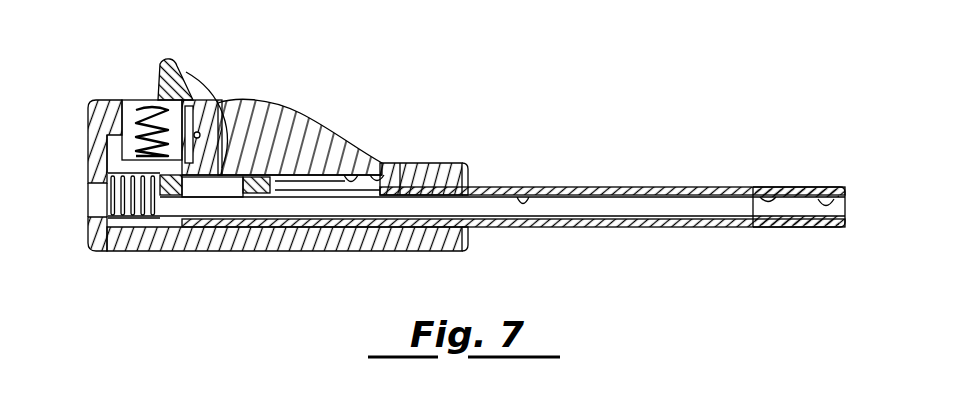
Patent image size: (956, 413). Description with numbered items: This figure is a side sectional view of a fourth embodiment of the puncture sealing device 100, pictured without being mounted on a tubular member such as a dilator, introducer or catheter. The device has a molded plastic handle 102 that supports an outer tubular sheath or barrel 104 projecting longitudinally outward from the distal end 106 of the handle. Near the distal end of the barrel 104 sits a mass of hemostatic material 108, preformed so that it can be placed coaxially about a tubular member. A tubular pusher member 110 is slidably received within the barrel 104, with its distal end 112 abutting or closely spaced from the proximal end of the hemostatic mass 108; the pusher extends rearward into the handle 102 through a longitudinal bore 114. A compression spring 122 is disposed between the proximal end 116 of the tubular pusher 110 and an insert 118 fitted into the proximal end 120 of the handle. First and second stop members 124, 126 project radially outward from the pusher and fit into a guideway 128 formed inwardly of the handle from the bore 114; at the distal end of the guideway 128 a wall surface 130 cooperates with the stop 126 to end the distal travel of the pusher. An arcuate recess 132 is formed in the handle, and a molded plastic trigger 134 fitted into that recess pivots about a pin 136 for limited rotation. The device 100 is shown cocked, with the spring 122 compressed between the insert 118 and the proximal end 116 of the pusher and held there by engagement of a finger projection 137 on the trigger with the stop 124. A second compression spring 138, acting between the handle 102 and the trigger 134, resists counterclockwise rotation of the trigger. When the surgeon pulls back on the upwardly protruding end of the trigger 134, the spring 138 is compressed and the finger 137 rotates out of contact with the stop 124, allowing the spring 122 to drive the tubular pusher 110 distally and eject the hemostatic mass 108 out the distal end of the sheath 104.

The puncture sealing device 100 is at (434, 158).
The handle 102 is at (302, 122).
The outer tubular sheath 104 is at (603, 187).
The distal end of the handle 106 is at (470, 172).
The mass of hemostatic material 108 is at (830, 200).
The tubular pusher member 110 is at (526, 204).
The distal end of the pusher member 112 is at (768, 195).
The longitudinal bore 114 is at (408, 252).
The proximal end of the tubular pusher 116 is at (163, 253).
The insert 118 is at (88, 178).
The proximal end of the handle 120 is at (90, 110).
The compression spring 122 is at (117, 251).
The first stop member 124 is at (193, 178).
The second stop member 126 is at (283, 192).
The guideway 128 is at (351, 176).
The wall surface 130 is at (377, 176).
The arcuate recess 132 is at (233, 108).
The trigger 134 is at (174, 58).
The pin 136 is at (197, 106).
The finger projection 137 is at (277, 123).
The compression spring 138 is at (133, 123).